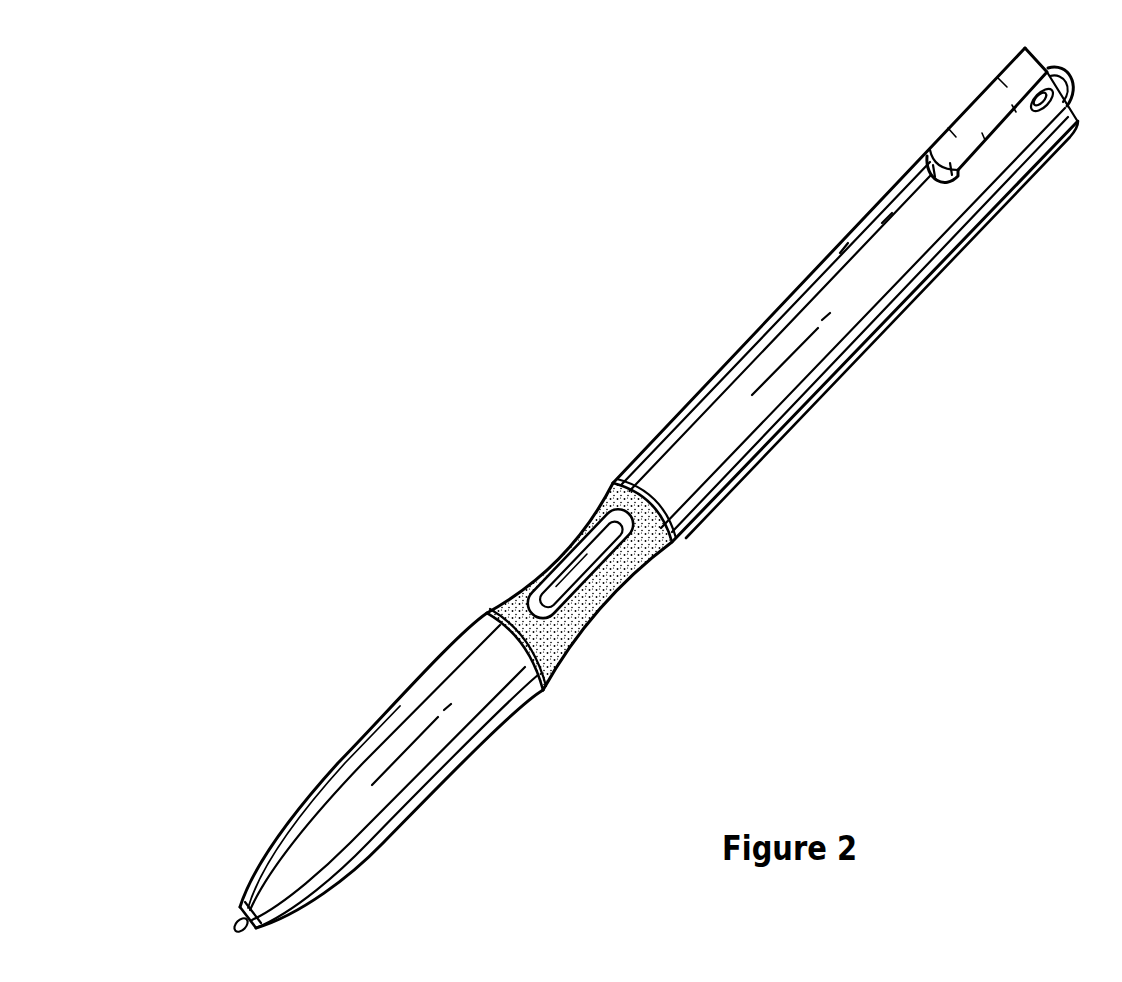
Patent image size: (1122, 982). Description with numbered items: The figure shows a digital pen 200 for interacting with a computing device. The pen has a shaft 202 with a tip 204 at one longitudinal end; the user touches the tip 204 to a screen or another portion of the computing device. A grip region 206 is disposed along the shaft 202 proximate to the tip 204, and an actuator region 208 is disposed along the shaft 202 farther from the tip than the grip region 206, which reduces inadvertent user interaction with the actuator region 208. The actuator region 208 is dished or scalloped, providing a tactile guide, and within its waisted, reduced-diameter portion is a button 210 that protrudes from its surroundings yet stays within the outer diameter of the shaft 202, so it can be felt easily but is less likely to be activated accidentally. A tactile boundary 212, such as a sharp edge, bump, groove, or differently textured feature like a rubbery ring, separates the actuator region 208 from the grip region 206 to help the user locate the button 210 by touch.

The digital pen 200 is at (585, 491).
The shaft 202 is at (418, 722).
The tip 204 is at (233, 925).
The grip region 206 is at (405, 830).
The actuator region 208 is at (647, 566).
The button 210 is at (562, 553).
The tactile boundary 212 is at (488, 615).